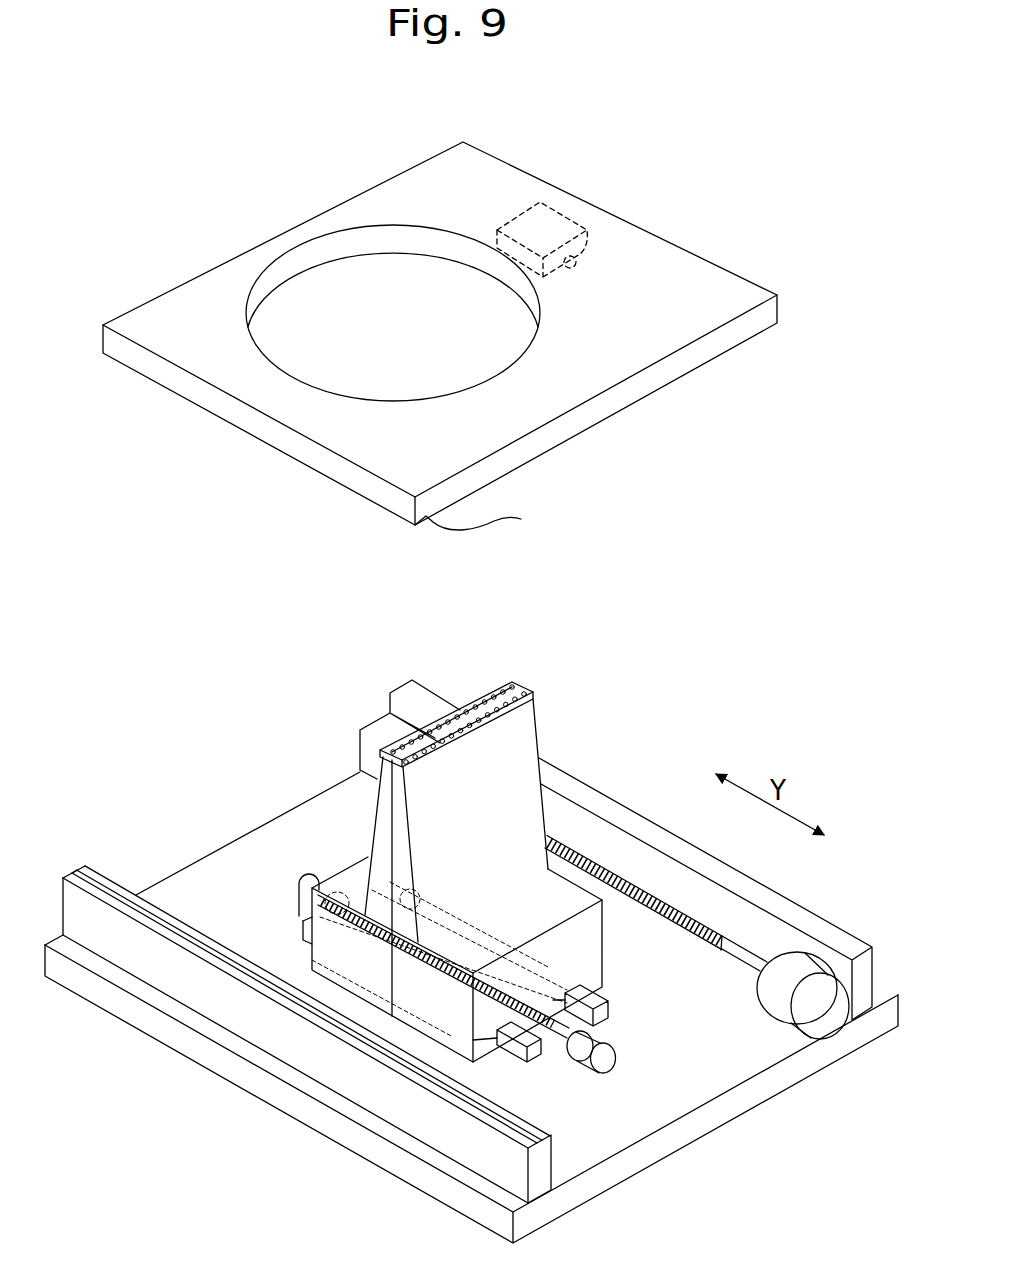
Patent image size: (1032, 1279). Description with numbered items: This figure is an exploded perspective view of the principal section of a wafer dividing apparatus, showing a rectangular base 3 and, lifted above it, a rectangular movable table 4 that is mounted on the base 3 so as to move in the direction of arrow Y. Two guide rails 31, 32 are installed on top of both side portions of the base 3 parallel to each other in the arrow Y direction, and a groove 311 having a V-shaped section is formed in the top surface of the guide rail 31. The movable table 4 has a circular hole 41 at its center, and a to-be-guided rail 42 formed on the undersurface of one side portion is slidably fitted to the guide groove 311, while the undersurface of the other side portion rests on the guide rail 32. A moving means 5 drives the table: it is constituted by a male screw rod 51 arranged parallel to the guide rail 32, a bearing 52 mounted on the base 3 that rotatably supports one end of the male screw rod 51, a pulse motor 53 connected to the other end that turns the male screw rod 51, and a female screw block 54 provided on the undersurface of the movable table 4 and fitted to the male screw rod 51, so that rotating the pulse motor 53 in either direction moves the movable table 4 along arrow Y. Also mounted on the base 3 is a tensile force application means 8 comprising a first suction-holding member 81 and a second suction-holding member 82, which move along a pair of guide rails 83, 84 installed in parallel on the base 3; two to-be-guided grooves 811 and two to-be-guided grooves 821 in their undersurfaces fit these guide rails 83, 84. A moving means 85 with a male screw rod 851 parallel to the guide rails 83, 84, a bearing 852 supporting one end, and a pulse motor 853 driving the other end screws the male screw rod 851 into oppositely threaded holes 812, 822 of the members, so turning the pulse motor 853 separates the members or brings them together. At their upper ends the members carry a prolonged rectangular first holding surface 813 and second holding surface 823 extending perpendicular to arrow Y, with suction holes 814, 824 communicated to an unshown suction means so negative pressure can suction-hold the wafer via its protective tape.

The base 3 is at (244, 1098).
The guide rail 31 is at (483, 1142).
The groove 311 is at (70, 876).
The guide rail 32 is at (815, 915).
The movable table 4 is at (686, 248).
The circular hole 41 is at (312, 308).
The to-be-guided rail 42 is at (485, 518).
The moving means 5 is at (717, 964).
The male screw rod 51 is at (660, 896).
The bearing 52 is at (383, 723).
The pulse motor 53 is at (823, 1024).
The female screw block 54 is at (556, 218).
The tensile force application means 8 is at (451, 853).
The first suction-holding member 81 is at (498, 741).
The to-be-guided grooves 811 is at (578, 983).
The threaded hole 812 is at (538, 1000).
The first holding surface 813 is at (538, 701).
The suction holes 814 is at (532, 685).
The second suction-holding member 82 is at (380, 832).
The to-be-guided grooves 821 is at (305, 945).
The threaded hole 822 is at (305, 917).
The second holding surface 823 is at (490, 690).
The suction holes 824 is at (510, 682).
The guide rail 83 is at (537, 1062).
The guide rail 84 is at (609, 1012).
The moving means 85 is at (465, 988).
The male screw rod 851 is at (562, 1040).
The bearing 852 is at (299, 887).
The pulse motor 853 is at (617, 1052).